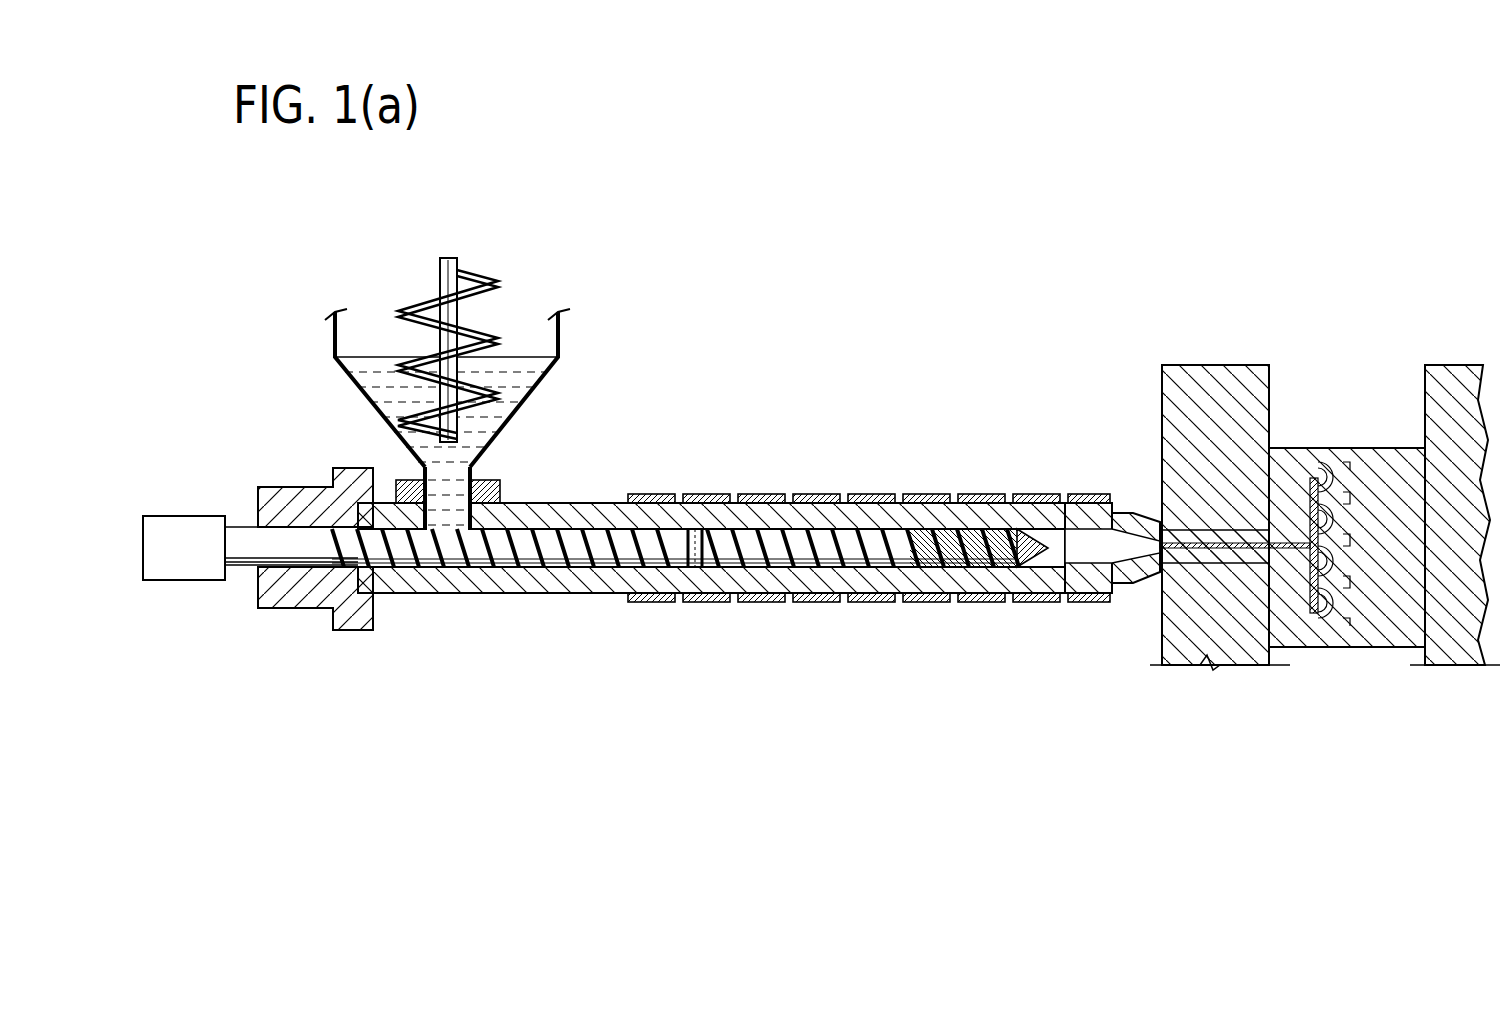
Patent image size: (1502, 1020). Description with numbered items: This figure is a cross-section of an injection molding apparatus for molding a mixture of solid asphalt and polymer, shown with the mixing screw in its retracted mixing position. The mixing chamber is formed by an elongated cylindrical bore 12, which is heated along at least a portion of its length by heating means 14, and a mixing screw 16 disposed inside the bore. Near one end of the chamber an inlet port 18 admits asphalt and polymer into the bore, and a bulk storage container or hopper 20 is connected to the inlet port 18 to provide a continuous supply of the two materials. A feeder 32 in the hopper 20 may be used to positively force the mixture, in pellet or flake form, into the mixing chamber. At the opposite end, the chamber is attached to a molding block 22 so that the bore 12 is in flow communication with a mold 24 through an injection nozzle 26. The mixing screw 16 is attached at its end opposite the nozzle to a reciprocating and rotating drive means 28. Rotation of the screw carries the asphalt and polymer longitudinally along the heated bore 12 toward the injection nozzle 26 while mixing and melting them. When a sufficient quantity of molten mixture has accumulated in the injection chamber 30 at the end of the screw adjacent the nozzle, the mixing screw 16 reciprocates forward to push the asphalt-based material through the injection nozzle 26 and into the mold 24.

The elongated cylindrical bore 12 is at (508, 595).
The heating means 14 is at (643, 501).
The mixing screw 16 is at (818, 533).
The inlet port 18 is at (470, 473).
The hopper 20 is at (565, 327).
The molding block 22 is at (1269, 385).
The mold 24 is at (1332, 448).
The injection nozzle 26 is at (883, 567).
The reciprocating and rotating drive means 28 is at (181, 516).
The injection chamber 30 is at (1127, 560).
The feeder 32 is at (487, 280).